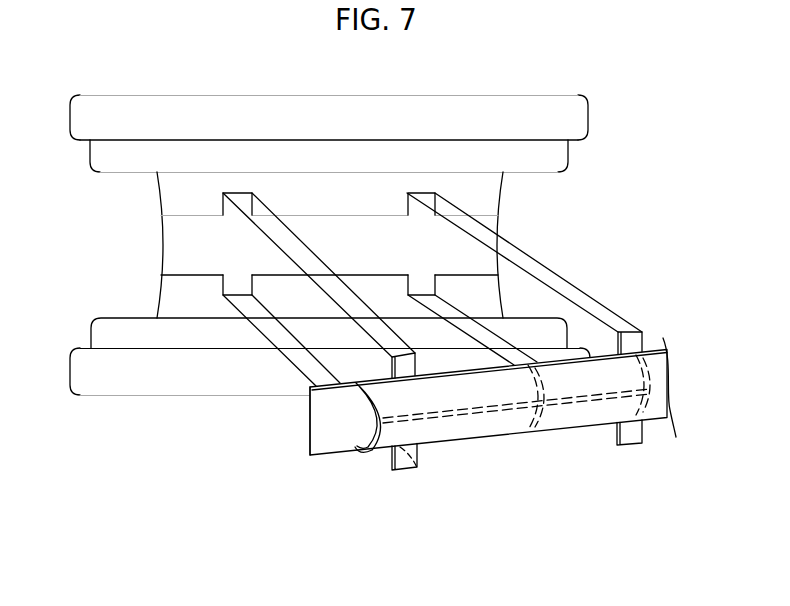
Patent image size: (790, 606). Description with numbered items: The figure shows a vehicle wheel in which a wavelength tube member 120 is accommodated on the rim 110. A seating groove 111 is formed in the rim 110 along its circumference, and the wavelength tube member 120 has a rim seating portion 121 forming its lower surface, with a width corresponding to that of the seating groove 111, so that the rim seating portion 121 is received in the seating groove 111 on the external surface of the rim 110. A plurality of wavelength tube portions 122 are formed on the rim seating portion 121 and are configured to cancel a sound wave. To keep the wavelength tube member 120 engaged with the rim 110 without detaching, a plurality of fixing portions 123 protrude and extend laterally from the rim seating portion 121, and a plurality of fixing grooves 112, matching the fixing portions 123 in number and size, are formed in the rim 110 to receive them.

The rim 110 is at (328, 320).
The seating groove 111 is at (230, 261).
The fixing grooves 112 is at (228, 219).
The wavelength tube member 120 is at (449, 382).
The rim seating portion 121 is at (333, 428).
The wavelength tube portions 122 is at (507, 418).
The fixing portions 123 is at (403, 365).